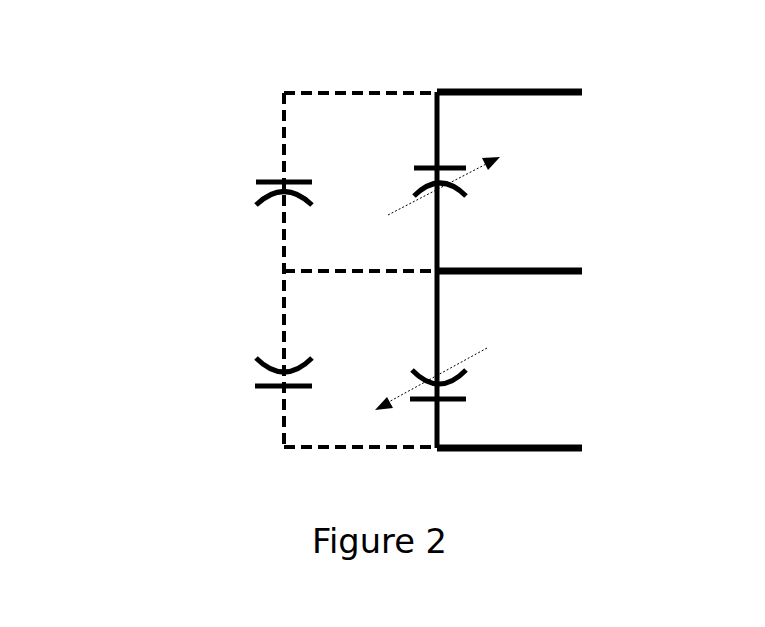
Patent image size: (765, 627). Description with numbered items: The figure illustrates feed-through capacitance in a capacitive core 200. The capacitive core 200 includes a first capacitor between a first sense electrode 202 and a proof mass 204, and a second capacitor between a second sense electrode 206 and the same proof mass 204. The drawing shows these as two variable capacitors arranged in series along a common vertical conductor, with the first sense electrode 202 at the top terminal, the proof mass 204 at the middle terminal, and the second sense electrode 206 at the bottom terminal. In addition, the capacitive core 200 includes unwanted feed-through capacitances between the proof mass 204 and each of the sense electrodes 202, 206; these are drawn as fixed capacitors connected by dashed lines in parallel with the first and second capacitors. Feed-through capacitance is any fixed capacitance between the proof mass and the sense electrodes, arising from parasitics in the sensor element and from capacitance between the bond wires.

The capacitive core 200 is at (124, 107).
The first sense electrode 202 is at (545, 90).
The proof mass 204 is at (552, 269).
The second sense electrode 206 is at (552, 446).